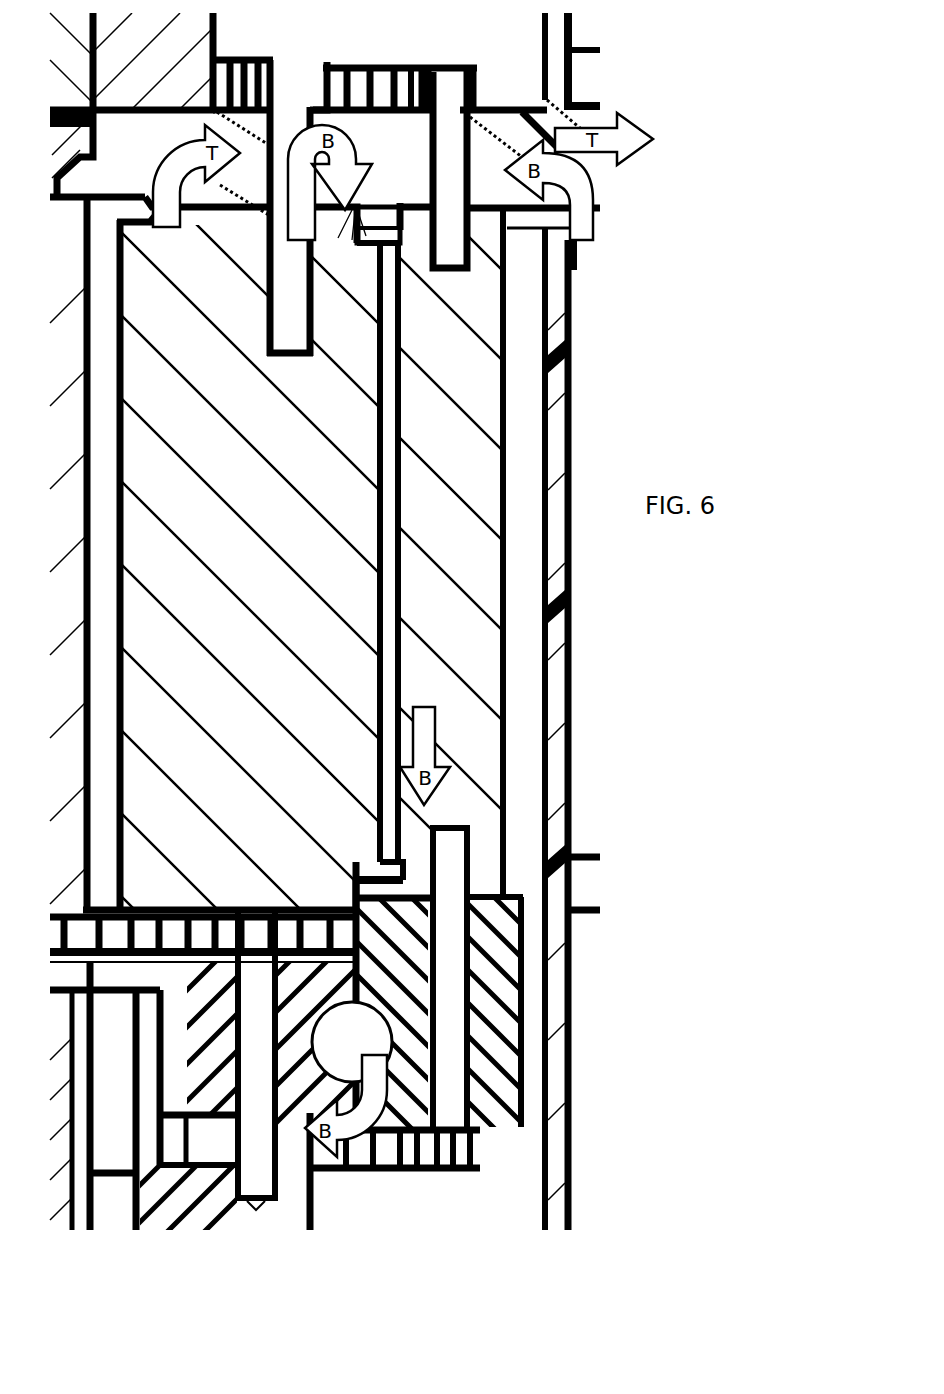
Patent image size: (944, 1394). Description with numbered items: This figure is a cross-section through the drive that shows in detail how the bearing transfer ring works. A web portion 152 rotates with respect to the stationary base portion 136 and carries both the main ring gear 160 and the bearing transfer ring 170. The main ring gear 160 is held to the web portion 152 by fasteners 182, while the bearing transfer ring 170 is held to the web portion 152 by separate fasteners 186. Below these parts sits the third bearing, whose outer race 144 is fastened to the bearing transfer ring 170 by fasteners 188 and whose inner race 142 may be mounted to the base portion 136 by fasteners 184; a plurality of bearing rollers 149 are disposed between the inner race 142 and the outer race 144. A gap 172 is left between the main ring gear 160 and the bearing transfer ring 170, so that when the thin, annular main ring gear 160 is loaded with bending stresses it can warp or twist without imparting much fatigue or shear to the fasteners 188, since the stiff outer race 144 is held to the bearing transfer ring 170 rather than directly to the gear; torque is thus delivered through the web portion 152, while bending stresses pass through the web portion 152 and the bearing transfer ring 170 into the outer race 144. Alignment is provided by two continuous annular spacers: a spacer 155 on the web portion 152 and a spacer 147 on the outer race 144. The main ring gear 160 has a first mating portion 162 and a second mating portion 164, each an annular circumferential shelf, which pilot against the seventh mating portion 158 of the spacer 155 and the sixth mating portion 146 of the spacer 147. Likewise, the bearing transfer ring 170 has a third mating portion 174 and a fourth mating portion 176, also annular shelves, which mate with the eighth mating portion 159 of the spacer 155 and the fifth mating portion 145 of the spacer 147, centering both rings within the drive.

The base portion 136 is at (107, 1204).
The inner race 142 is at (285, 950).
The outer race 144 is at (473, 1172).
The fifth mating portion 145 is at (400, 880).
The sixth mating portion 146 is at (330, 900).
The spacer 147 is at (350, 893).
The bearing rollers 149 is at (307, 1056).
The web portion 152 is at (481, 169).
The spacer 155 is at (355, 195).
The seventh mating portion 158 is at (365, 207).
The eighth mating portion 159 is at (373, 208).
The main ring gear 160 is at (247, 552).
The first mating portion 162 is at (350, 208).
The second mating portion 164 is at (347, 887).
The bearing transfer ring 170 is at (442, 552).
The gap 172 is at (362, 680).
The third mating portion 174 is at (357, 207).
The fourth mating portion 176 is at (357, 855).
The fasteners 182 is at (263, 82).
The fasteners 184 is at (233, 1163).
The fasteners 186 is at (413, 70).
The fasteners 188 is at (422, 1027).